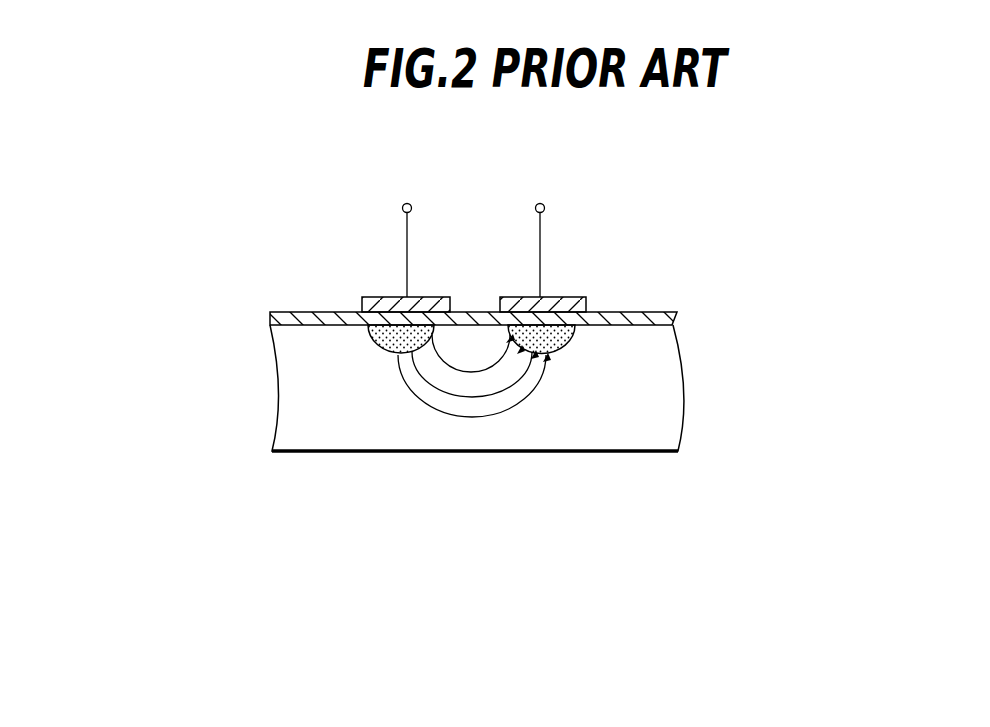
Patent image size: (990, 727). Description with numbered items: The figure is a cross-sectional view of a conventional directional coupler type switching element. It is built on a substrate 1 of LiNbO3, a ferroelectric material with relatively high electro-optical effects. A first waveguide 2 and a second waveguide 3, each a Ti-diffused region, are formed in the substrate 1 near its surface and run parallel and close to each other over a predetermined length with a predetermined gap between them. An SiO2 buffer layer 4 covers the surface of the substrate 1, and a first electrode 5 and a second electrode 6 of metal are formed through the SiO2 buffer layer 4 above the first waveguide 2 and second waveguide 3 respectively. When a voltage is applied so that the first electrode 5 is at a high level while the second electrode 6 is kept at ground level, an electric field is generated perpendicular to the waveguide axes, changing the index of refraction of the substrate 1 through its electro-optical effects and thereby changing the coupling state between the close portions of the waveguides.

The substrate 1 is at (562, 425).
The first waveguide 2 is at (382, 345).
The second waveguide 3 is at (574, 339).
The SiO2 buffer layer 4 is at (670, 316).
The first electrode 5 is at (362, 296).
The second electrode 6 is at (578, 296).